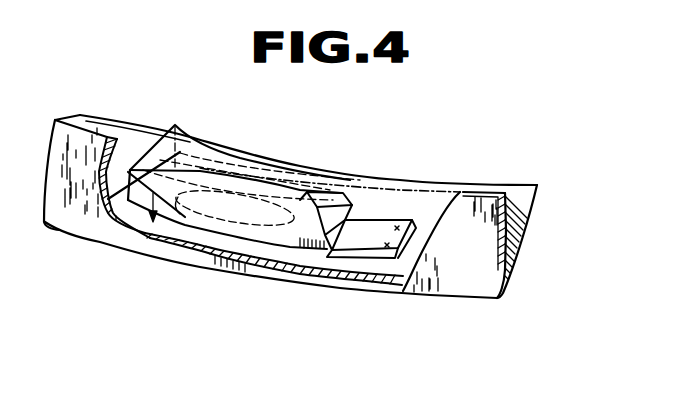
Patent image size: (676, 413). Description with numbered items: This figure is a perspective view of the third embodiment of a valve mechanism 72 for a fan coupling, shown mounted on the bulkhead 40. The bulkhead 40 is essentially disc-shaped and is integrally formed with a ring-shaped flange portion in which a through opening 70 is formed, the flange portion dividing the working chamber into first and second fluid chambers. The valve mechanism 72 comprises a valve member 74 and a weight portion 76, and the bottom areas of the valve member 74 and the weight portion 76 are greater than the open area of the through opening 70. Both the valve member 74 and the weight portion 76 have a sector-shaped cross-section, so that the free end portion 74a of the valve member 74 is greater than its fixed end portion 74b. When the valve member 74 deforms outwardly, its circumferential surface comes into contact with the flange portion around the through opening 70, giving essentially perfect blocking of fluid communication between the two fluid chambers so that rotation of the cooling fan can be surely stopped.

The bulkhead 40 is at (468, 282).
The through opening 70 is at (200, 250).
The valve mechanism 72 is at (282, 284).
The valve member 74 is at (276, 239).
The free end portion 74a is at (110, 218).
The fixed end portion 74b is at (403, 292).
The weight portion 76 is at (203, 148).